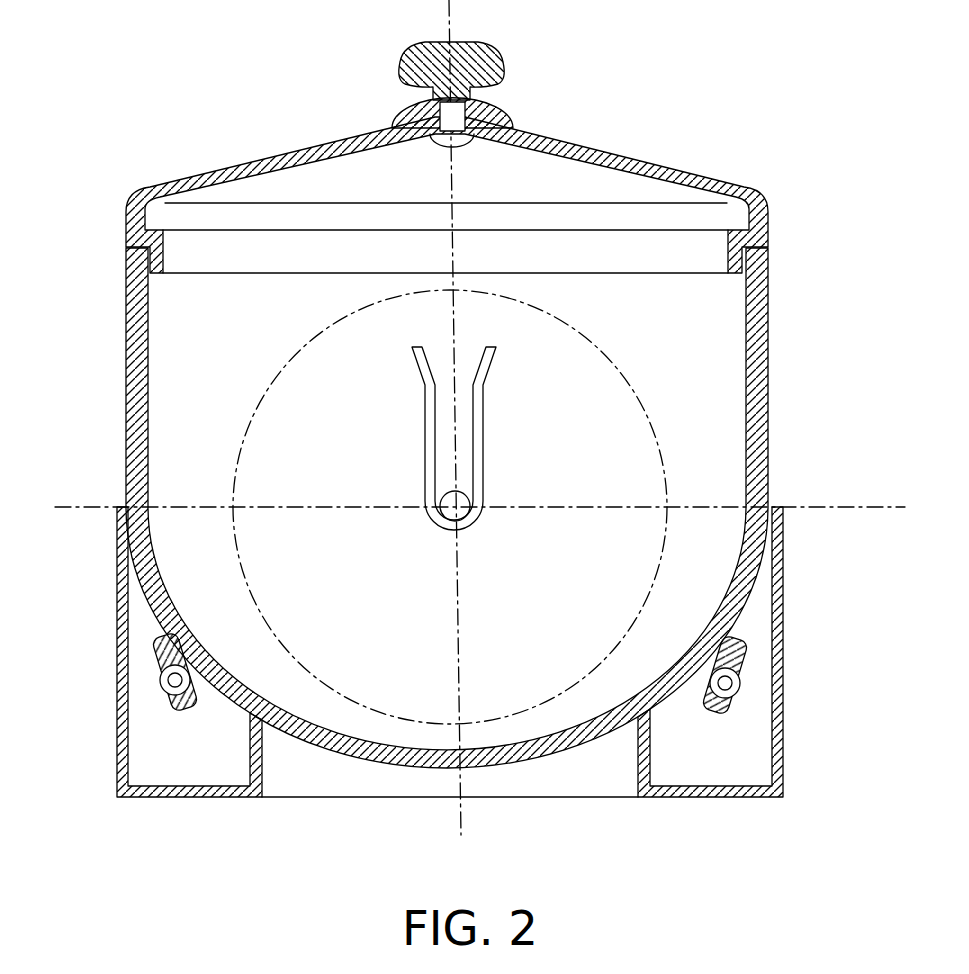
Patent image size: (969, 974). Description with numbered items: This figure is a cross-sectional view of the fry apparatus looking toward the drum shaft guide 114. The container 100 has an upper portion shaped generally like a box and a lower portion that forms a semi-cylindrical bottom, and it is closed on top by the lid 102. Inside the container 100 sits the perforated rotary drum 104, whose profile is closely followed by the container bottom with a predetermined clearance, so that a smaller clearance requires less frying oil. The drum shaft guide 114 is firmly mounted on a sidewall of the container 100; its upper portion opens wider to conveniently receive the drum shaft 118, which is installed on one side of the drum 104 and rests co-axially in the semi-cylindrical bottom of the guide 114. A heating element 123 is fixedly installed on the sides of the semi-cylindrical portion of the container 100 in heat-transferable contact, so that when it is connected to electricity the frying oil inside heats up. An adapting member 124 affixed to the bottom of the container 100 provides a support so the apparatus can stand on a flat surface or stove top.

The container 100 is at (137, 433).
The lid 102 is at (287, 150).
The perforated rotary drum 104 is at (653, 433).
The drum shaft guide 114 is at (425, 473).
The drum shaft 118 is at (458, 512).
The heating element 123 is at (740, 690).
The adapting member 124 is at (117, 688).